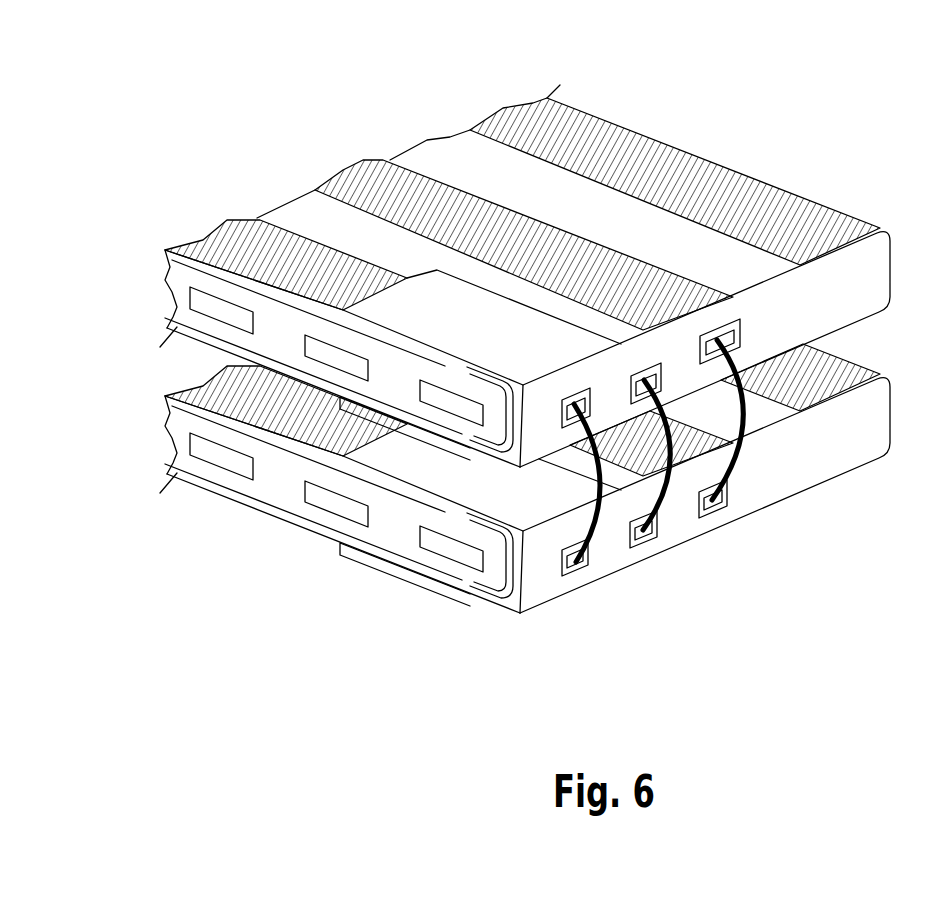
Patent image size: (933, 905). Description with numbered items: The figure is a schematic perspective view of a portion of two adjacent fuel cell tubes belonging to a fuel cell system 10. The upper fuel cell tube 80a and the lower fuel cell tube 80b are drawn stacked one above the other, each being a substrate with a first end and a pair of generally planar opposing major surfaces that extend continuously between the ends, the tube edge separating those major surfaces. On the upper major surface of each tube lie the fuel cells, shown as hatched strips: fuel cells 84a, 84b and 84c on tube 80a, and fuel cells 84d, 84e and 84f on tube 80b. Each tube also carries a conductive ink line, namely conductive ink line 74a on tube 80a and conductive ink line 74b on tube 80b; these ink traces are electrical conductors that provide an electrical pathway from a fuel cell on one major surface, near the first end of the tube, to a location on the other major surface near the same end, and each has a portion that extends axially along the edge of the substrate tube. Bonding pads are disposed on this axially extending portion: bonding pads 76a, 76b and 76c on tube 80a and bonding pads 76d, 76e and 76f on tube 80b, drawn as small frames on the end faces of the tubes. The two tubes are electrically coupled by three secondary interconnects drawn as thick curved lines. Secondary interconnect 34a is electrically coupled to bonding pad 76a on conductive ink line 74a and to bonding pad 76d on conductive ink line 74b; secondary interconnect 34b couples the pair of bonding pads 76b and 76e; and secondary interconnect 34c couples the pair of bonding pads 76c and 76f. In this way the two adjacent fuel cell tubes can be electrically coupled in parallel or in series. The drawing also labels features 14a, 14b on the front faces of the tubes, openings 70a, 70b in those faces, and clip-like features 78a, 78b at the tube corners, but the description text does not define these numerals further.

The fuel cell system 10 is at (729, 92).
The battery cell frame (upper) 14a is at (280, 338).
The battery cell frame (lower) 14b is at (453, 578).
The secondary interconnect 34a is at (601, 540).
The secondary interconnect 34b is at (680, 503).
The secondary interconnect 34c is at (738, 468).
The opening 70a is at (200, 303).
The opening 70b is at (317, 507).
The conductive ink line 74a is at (440, 300).
The conductive ink line 74b is at (383, 583).
The bonding pad 76a is at (556, 400).
The bonding pad 76b is at (622, 372).
The bonding pad 76c is at (688, 338).
The bonding pad 76d is at (583, 587).
The bonding pad 76e is at (650, 553).
The bonding pad 76f is at (723, 530).
The clip 78a is at (511, 396).
The clip 78b is at (497, 601).
The fuel cell tube 80a is at (798, 310).
The fuel cell tube 80b is at (801, 457).
The fuel cell 84a is at (245, 226).
The fuel cell 84b is at (366, 166).
The fuel cell 84c is at (514, 110).
The fuel cell 84d is at (238, 396).
The fuel cell 84e is at (701, 432).
The fuel cell 84f is at (832, 377).